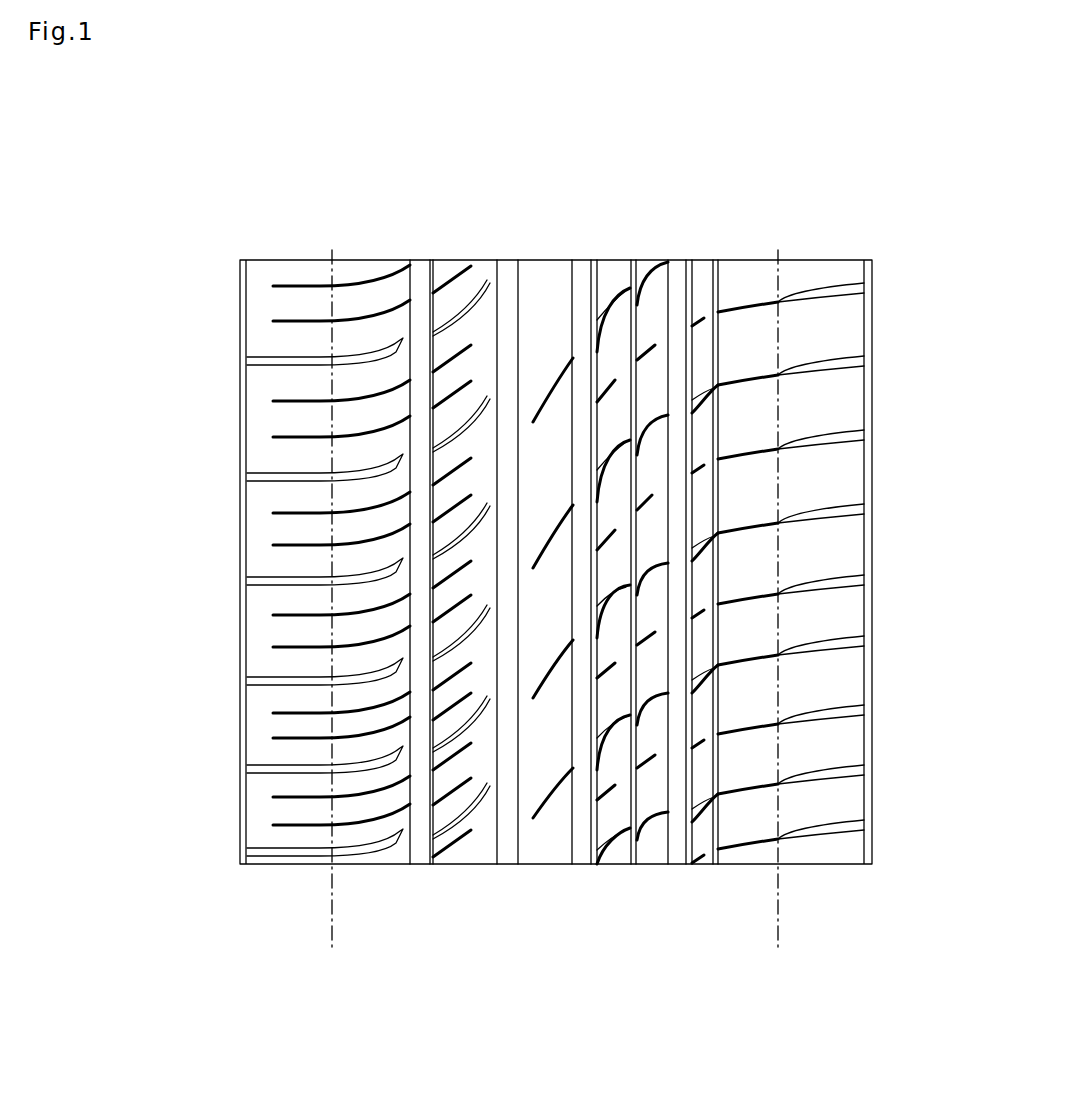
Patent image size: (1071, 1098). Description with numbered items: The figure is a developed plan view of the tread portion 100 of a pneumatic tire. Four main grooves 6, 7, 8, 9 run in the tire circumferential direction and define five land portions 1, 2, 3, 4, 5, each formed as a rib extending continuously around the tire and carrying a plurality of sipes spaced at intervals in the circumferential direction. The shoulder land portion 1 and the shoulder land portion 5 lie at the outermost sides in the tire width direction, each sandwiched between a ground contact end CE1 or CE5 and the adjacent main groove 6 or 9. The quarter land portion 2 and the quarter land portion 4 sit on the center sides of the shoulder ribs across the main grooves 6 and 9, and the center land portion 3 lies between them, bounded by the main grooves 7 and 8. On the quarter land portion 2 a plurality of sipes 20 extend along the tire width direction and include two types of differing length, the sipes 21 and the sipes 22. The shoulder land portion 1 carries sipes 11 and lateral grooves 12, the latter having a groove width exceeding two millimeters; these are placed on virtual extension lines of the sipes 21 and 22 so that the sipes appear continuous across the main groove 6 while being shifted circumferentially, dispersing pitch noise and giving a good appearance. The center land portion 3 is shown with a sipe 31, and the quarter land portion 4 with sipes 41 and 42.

The tread portion 100 is at (861, 200).
The shoulder land portion 1 is at (410, 261).
The quarter land portion 2 is at (497, 261).
The center land portion 3 is at (572, 261).
The quarter land portion 4 is at (668, 261).
The shoulder land portion 5 is at (778, 261).
The main groove 6 is at (420, 838).
The main groove 7 is at (506, 838).
The main groove 8 is at (583, 838).
The main groove 9 is at (678, 838).
The sipe 11 is at (335, 712).
The lateral groove 12 is at (335, 768).
The sipes 20 is at (293, 561).
The sipe 21 is at (443, 364).
The sipe 22 is at (453, 430).
The sipe 31 is at (548, 386).
The sipe 41 is at (655, 496).
The sipe 42 is at (653, 417).
The ground contact end CE1 is at (332, 935).
The ground contact end CE5 is at (780, 935).